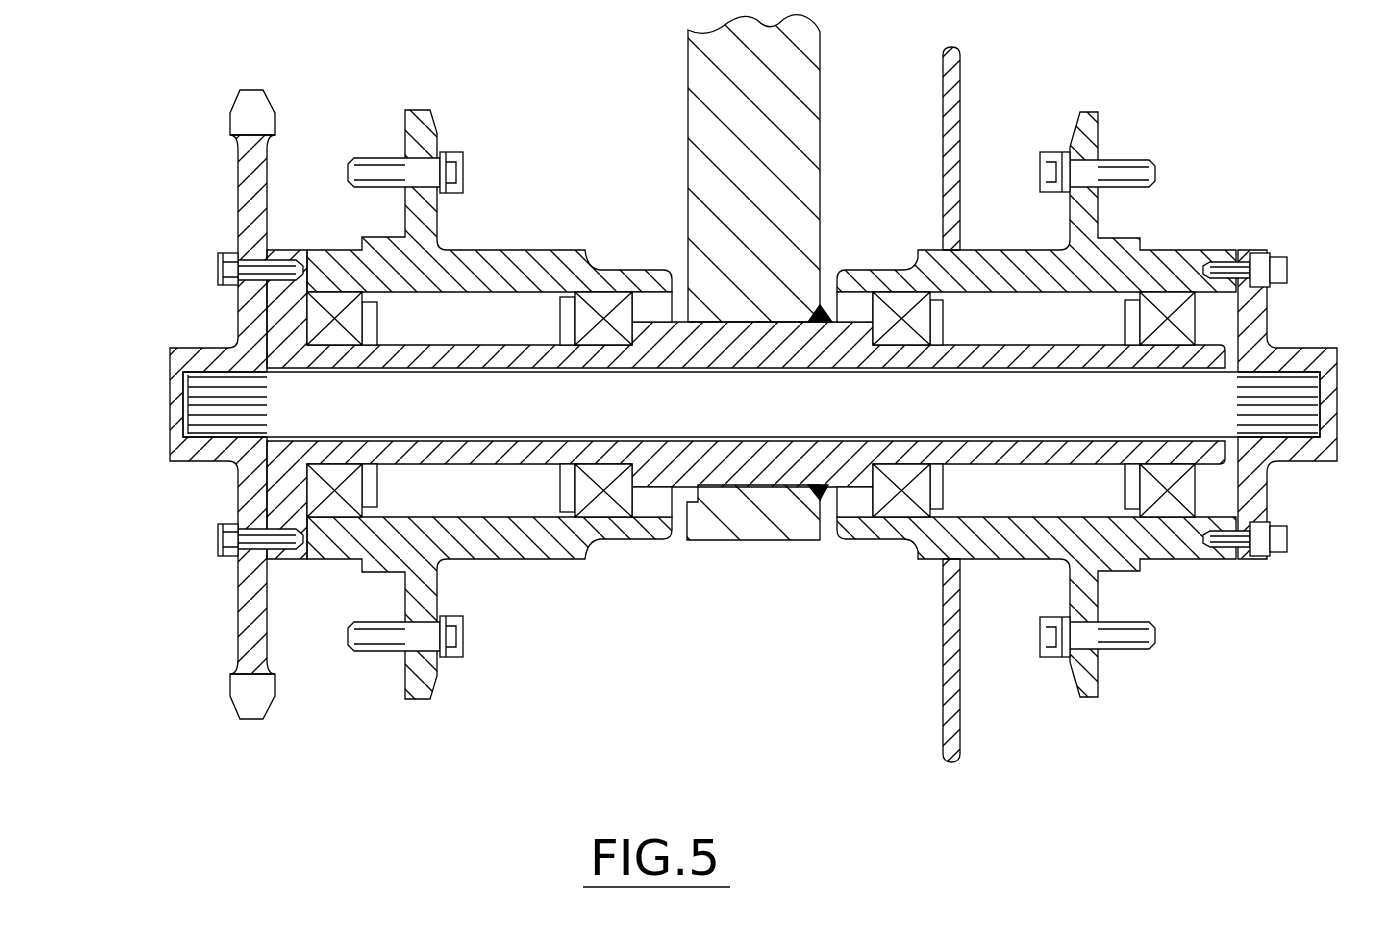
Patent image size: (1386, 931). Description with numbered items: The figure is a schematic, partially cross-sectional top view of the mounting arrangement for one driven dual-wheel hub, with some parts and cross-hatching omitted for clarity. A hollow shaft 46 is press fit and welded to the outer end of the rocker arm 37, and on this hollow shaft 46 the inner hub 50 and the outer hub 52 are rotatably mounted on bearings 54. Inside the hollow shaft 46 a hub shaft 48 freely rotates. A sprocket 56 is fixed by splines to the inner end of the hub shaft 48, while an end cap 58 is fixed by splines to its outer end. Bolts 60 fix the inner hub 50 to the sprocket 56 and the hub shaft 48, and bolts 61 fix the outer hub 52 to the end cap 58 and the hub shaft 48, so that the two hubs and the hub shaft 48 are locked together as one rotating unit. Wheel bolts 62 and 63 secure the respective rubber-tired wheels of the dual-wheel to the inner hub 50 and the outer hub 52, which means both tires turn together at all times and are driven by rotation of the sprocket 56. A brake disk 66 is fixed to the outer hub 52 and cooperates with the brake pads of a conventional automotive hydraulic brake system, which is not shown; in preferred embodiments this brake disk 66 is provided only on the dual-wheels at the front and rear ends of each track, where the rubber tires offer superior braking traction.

The rocker arm 37 is at (695, 155).
The hollow shaft 46 is at (717, 340).
The hub shaft 48 is at (715, 409).
The inner hub 50 is at (563, 559).
The outer hub 52 is at (1172, 268).
The bearings 54 is at (355, 318).
The sprocket 56 is at (268, 168).
The end cap 58 is at (1308, 355).
The bolts 60 is at (217, 268).
The bolts 61 is at (1288, 272).
The wheel bolts 62 is at (465, 173).
The wheel bolts 63 is at (1117, 175).
The brake disk 66 is at (957, 93).